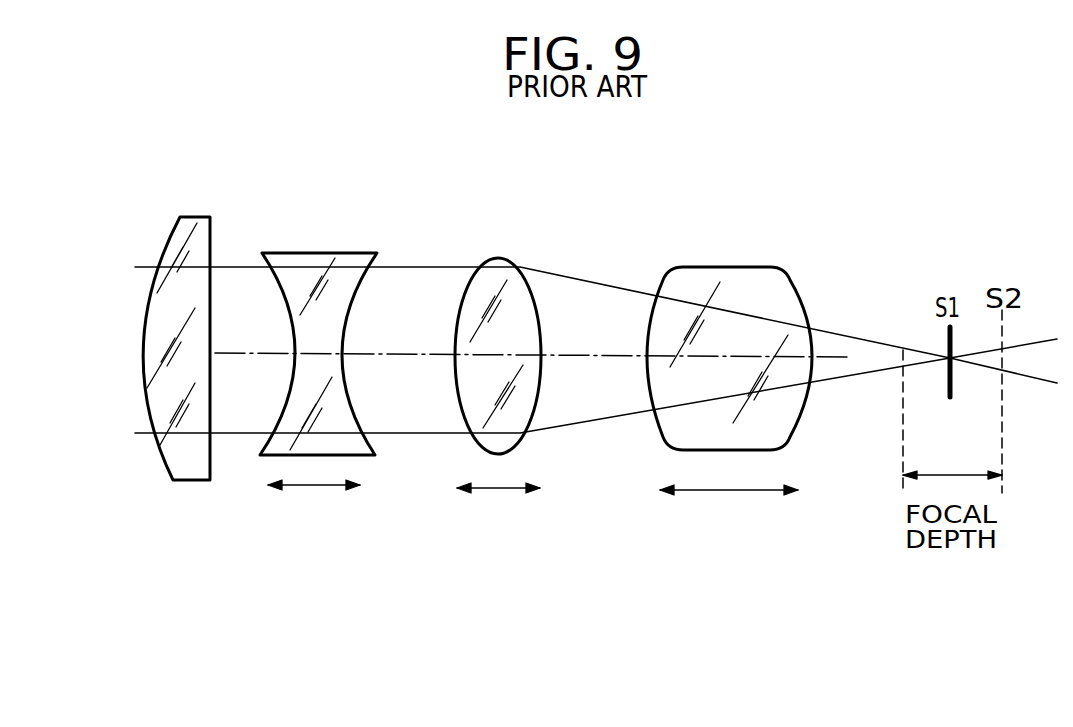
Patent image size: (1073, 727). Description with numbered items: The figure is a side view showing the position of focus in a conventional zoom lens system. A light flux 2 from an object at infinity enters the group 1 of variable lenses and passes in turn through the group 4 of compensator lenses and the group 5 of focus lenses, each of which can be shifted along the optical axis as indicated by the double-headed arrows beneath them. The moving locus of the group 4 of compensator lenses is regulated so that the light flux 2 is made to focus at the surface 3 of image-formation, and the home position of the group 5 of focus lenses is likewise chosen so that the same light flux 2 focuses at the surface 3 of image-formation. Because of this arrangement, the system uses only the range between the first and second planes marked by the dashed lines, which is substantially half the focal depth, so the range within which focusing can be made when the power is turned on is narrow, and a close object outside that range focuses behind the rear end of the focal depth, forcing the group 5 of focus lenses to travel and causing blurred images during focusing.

The group of variable lenses 1 is at (320, 253).
The light flux 2 is at (237, 267).
The surface of image-formation 3 is at (947, 347).
The group of compensator lenses 4 is at (497, 258).
The group of focus lenses 5 is at (725, 267).